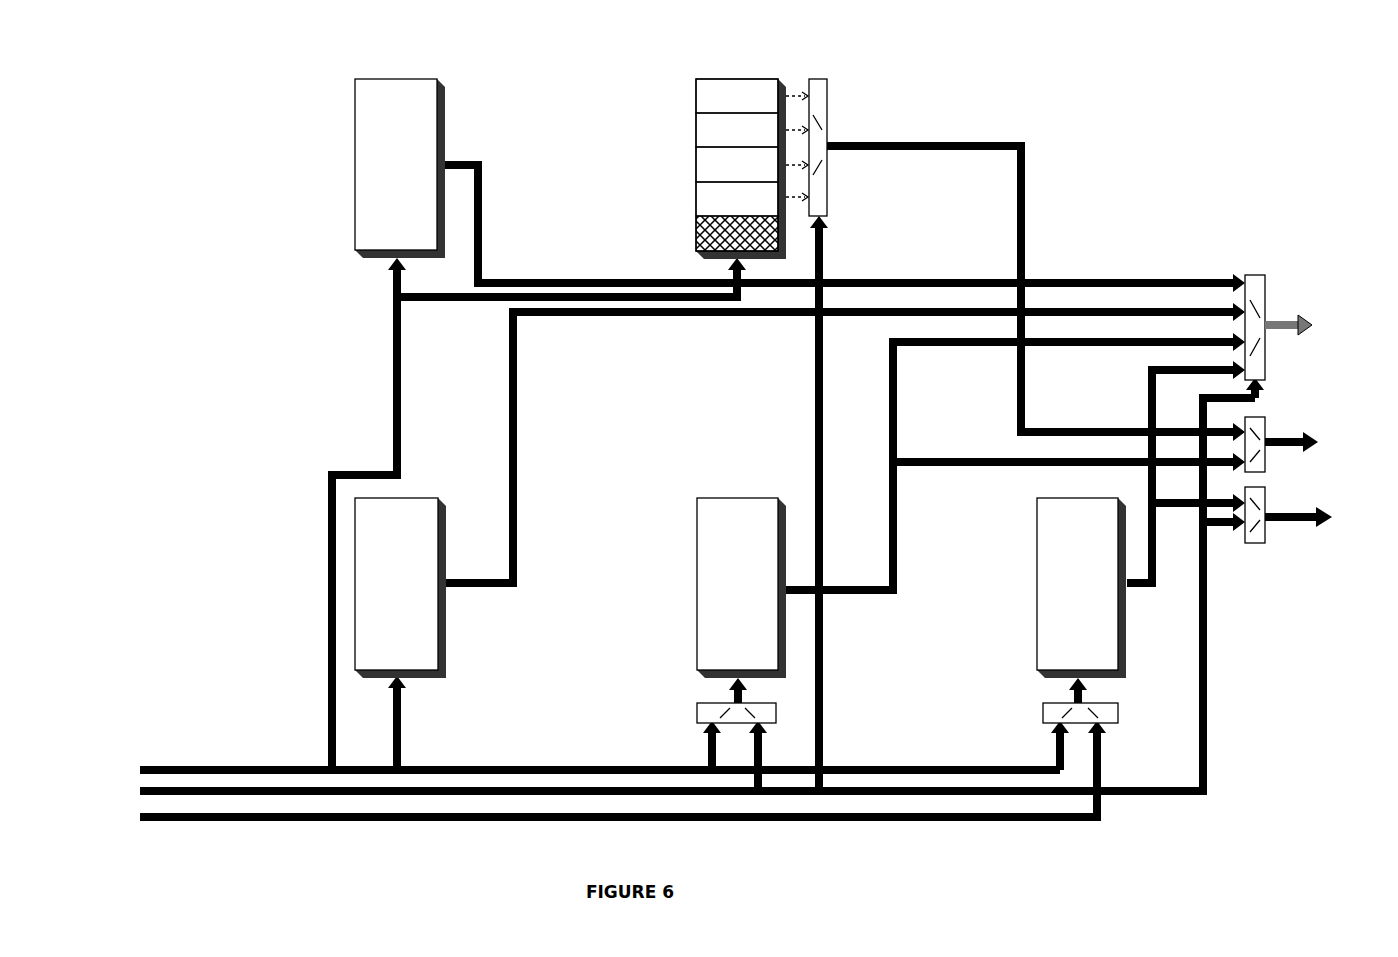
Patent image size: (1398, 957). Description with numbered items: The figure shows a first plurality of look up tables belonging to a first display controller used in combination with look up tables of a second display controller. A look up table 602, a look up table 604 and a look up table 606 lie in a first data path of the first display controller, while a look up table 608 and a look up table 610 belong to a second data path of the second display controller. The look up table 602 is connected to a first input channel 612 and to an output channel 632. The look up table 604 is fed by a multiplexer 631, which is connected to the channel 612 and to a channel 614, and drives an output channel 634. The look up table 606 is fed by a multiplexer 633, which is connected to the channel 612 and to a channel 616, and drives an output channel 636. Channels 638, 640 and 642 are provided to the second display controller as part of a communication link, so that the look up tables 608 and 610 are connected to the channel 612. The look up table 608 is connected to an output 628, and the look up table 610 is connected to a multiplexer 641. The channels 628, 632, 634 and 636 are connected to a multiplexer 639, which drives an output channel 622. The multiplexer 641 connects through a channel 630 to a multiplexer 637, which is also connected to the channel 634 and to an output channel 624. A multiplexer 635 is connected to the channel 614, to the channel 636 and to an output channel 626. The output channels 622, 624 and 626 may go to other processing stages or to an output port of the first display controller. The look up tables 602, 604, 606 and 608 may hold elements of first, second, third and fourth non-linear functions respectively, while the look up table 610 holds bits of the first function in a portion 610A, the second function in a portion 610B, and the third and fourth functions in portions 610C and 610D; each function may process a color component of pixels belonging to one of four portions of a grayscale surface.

The look up table 602 is at (403, 497).
The look up table 604 is at (740, 497).
The look up table 606 is at (1036, 543).
The look up table 608 is at (394, 78).
The look up table 610 is at (691, 148).
The portion 610A is at (708, 92).
The portion 610B is at (708, 121).
The portion 610C is at (696, 164).
The portion 610D is at (696, 197).
The first input channel 612 is at (138, 770).
The channel 614 is at (138, 791).
The channel 616 is at (138, 817).
The output channel 622 is at (1313, 325).
The channel 624 is at (1319, 442).
The channel 626 is at (1333, 517).
The output 628 is at (485, 179).
The channel 630 is at (960, 144).
The multiplexer 631 is at (696, 712).
The output channel 632 is at (518, 513).
The multiplexer 633 is at (1042, 714).
The output channel 634 is at (890, 596).
The multiplexer 635 is at (1256, 544).
The output channel 636 is at (1152, 590).
The multiplexer 637 is at (1267, 430).
The channel 638 is at (345, 470).
The multiplexer 639 is at (1267, 312).
The channel 640 is at (445, 304).
The multiplexer 641 is at (828, 96).
The channel 642 is at (814, 410).